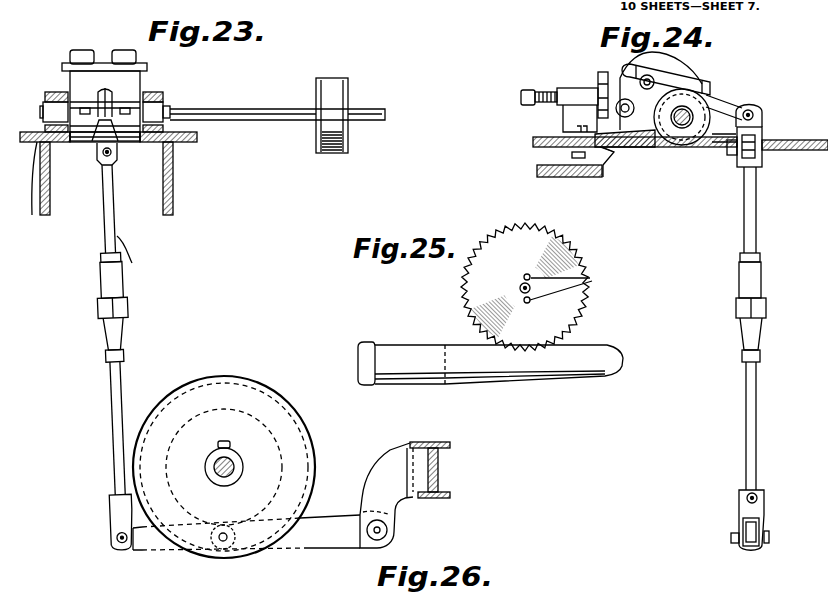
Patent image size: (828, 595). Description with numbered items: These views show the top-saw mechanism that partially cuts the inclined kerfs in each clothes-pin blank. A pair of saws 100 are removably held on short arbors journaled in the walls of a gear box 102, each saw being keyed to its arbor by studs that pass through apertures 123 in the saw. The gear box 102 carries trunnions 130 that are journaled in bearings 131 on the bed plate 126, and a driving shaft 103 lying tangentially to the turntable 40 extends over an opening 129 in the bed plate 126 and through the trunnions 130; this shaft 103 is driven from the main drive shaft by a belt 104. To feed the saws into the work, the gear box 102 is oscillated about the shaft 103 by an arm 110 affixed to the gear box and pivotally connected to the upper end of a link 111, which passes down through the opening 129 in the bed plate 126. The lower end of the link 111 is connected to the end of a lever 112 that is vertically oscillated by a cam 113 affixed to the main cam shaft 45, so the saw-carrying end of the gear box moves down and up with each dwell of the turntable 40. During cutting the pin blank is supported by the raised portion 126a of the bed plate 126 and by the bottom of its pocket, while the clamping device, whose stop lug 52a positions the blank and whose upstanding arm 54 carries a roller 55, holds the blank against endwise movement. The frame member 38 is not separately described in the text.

In FIG. 24, the frame member 38 is at (610, 177).
In FIG. 24, the turntable 40 is at (577, 168).
In FIG. 23, the cam shaft 45 is at (238, 458).
In FIG. 24, the stop lug 52a is at (576, 118).
In FIG. 24, the upstanding arm 54 is at (600, 86).
In FIG. 24, the roller 55 is at (601, 72).
In FIG. 23, the saw 100 is at (80, 141).
In FIG. 24, the saw 100 is at (653, 140).
In FIG. 25, the saw 100 is at (558, 241).
In FIG. 23, the gear box 102 is at (90, 140).
In FIG. 24, the gear box 102 is at (693, 107).
In FIG. 23, the shaft 103 is at (252, 121).
In FIG. 24, the shaft 103 is at (682, 128).
In FIG. 23, the belt 104 is at (328, 156).
In FIG. 24, the arm 110 is at (722, 105).
In FIG. 23, the link 111 is at (125, 278).
In FIG. 24, the link 111 is at (745, 210).
In FIG. 23, the lever 112 is at (160, 548).
In FIG. 23, the cam 113 is at (226, 378).
In FIG. 25, the apertures 123 is at (588, 283).
In FIG. 23, the bed plate 126 is at (173, 160).
In FIG. 24, the bed plate 126 is at (588, 177).
In FIG. 24, the raised portion of the bed plate 126a is at (667, 168).
In FIG. 23, the opening 129 is at (34, 189).
In FIG. 24, the opening 129 is at (773, 137).
In FIG. 23, the trunnions 130 is at (46, 106).
In FIG. 24, the trunnions 130 is at (702, 103).
In FIG. 23, the bearings 131 is at (52, 92).
In FIG. 24, the bearings 131 is at (712, 107).